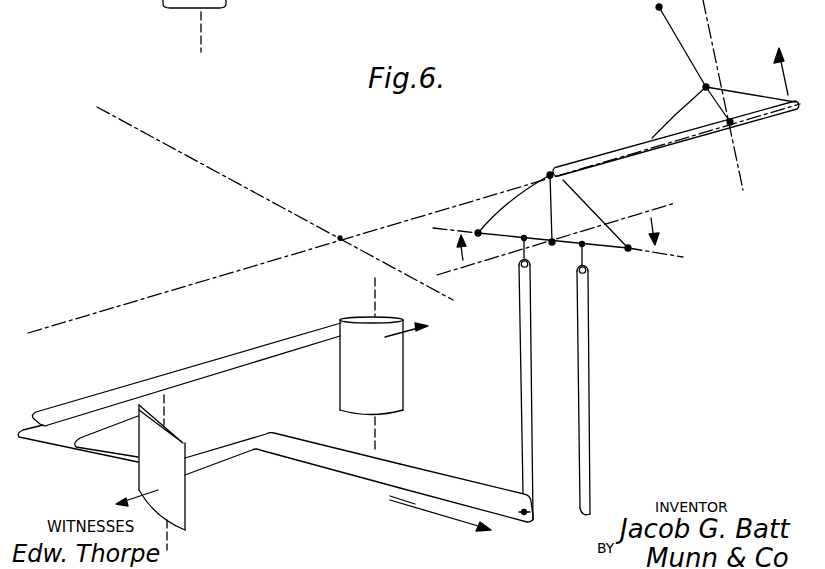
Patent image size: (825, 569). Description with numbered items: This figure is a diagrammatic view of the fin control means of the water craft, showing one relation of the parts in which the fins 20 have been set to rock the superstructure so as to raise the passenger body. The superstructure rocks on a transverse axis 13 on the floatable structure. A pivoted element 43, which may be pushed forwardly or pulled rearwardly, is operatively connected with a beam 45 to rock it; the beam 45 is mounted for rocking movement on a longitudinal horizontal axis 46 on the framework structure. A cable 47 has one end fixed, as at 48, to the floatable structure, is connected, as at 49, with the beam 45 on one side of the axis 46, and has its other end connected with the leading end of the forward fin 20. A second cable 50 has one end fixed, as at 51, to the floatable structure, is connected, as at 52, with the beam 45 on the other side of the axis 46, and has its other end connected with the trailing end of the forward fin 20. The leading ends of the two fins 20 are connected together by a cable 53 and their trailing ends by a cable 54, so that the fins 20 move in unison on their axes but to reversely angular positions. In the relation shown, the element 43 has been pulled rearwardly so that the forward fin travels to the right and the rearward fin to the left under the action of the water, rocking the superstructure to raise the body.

The transverse axis 13 is at (342, 237).
The fin 20 is at (404, 355).
The pivoted element 43 is at (688, 58).
The beam 45 is at (616, 250).
The longitudinal horizontal axis 46 is at (551, 240).
The cable 47 is at (343, 473).
The fixed end of cable 48 is at (524, 516).
The cable connection to beam 49 is at (520, 258).
The cable 50 is at (437, 478).
The fixed end of cable 51 is at (582, 505).
The cable connection to beam 52 is at (588, 265).
The cable 53 is at (83, 457).
The cable 54 is at (55, 428).